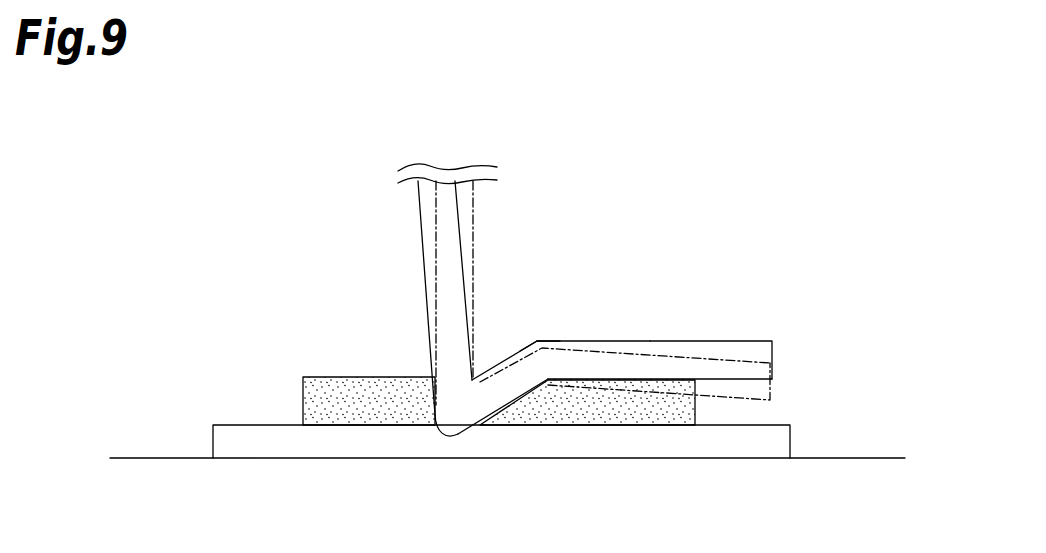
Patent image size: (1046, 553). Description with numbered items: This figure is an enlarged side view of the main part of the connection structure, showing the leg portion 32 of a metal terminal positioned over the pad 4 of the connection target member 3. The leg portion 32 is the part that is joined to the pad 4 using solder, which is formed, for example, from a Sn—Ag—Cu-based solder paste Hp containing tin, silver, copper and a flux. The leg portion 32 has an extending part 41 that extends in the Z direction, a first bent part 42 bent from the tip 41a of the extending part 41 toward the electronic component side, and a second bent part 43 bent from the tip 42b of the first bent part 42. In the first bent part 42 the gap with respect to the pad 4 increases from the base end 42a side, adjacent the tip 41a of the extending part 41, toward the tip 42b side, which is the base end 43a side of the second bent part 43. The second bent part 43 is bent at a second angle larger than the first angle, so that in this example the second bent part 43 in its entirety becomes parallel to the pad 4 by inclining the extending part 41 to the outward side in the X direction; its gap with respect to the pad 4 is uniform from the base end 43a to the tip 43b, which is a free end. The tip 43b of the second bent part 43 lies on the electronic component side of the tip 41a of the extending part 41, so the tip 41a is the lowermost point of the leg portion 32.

The connection target member 3 is at (153, 455).
The pad 4 is at (235, 428).
The solder paste Hp is at (790, 413).
The leg portion 32 is at (520, 328).
The extending part 41 is at (430, 262).
The tip of the extending part 41a is at (452, 440).
The first bent part 42 is at (482, 389).
The base end of the first bent part 42a is at (483, 420).
The tip of the first bent part 42b is at (539, 342).
The second bent part 43 is at (657, 319).
The base end of the second bent part 43a is at (548, 343).
The tip of the second bent part 43b is at (746, 346).